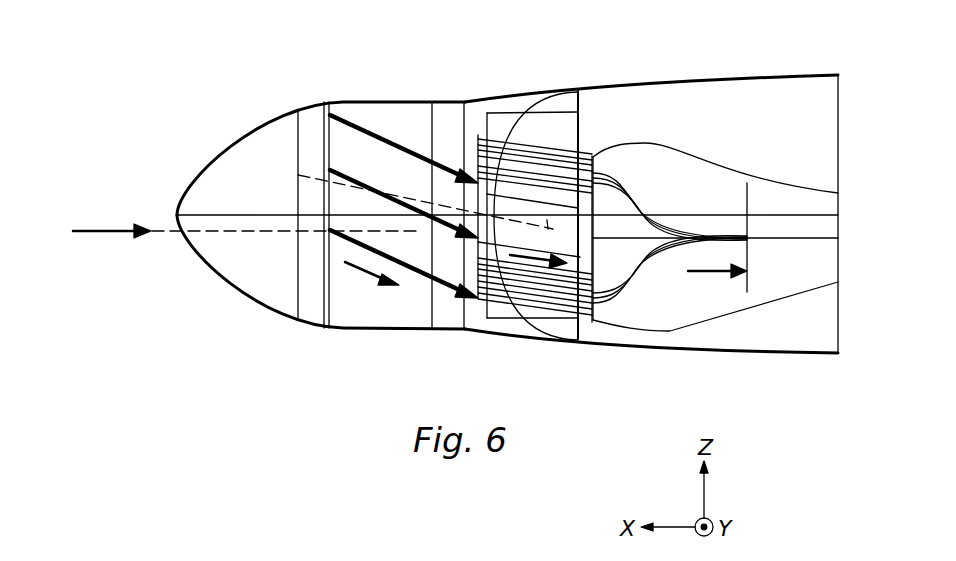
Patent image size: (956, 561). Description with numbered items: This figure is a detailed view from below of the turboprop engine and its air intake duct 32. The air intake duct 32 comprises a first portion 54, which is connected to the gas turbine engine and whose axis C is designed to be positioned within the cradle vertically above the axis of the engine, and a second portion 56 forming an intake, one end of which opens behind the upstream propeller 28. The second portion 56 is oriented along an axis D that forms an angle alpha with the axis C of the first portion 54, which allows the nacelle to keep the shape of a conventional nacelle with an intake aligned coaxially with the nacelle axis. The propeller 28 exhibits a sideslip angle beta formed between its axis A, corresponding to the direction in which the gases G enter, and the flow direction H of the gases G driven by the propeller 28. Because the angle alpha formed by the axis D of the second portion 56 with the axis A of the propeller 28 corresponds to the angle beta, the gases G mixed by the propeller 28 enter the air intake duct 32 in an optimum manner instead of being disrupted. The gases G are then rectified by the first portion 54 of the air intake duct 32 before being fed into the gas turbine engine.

The upstream propeller 28 is at (378, 305).
The air intake duct 32 is at (787, 262).
The first portion 54 is at (640, 333).
The second portion 56 is at (492, 292).
The axis of the propeller A is at (198, 213).
The axis of the first portion C is at (798, 240).
The axis of the second portion D is at (528, 223).
The gases G is at (108, 233).
The flow direction of the gases H is at (385, 137).